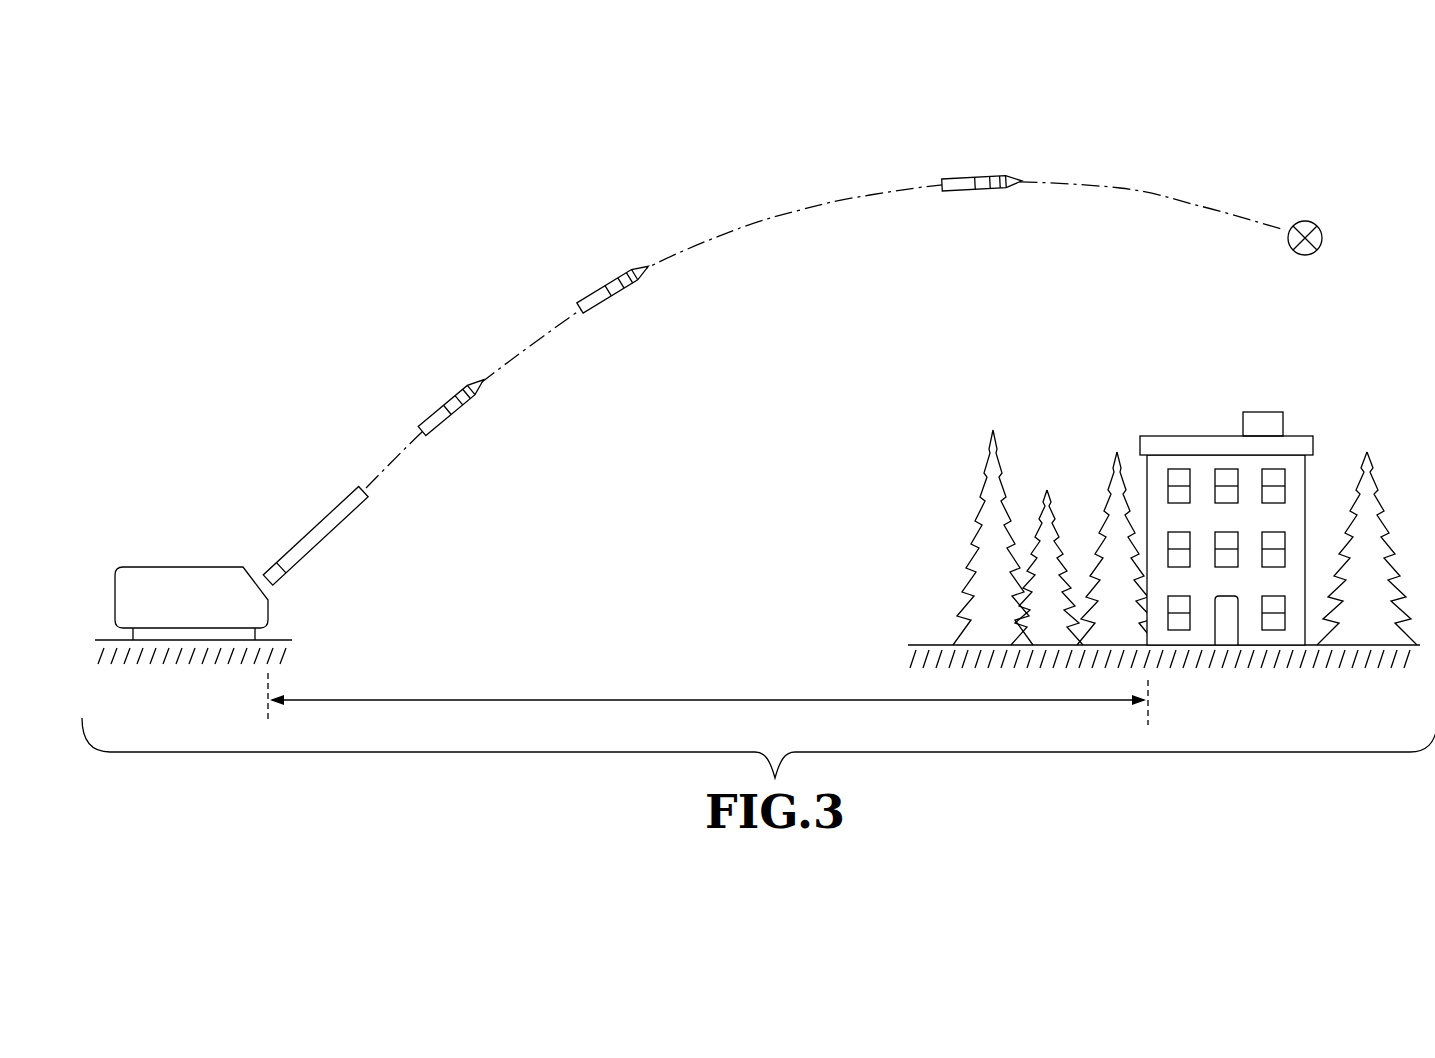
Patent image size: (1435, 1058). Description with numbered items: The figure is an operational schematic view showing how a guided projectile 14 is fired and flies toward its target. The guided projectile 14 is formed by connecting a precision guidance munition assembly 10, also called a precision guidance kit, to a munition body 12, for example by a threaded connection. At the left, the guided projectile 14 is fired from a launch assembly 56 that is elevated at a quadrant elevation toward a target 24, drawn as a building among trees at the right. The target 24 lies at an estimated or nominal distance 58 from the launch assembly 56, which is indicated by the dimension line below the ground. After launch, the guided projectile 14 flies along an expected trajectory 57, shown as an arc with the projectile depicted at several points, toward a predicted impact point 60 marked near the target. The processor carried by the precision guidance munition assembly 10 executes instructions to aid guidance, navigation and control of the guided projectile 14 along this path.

The precision guidance munition assembly 10 is at (643, 282).
The munition body 12 is at (608, 304).
The guided projectile 14 is at (598, 280).
The target 24 is at (1298, 420).
The launch assembly 56 is at (318, 523).
The expected trajectory 57 is at (855, 196).
The estimated or nominal distance 58 is at (650, 698).
The predicted impact point 60 is at (1322, 236).